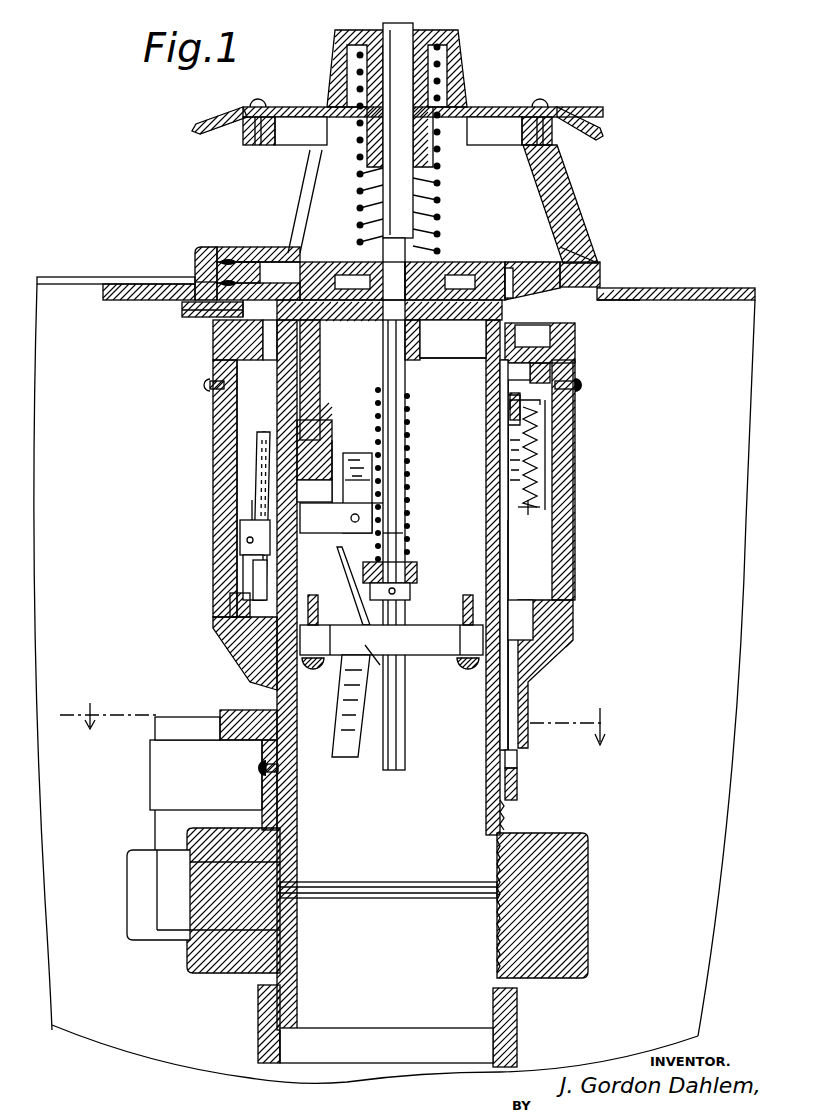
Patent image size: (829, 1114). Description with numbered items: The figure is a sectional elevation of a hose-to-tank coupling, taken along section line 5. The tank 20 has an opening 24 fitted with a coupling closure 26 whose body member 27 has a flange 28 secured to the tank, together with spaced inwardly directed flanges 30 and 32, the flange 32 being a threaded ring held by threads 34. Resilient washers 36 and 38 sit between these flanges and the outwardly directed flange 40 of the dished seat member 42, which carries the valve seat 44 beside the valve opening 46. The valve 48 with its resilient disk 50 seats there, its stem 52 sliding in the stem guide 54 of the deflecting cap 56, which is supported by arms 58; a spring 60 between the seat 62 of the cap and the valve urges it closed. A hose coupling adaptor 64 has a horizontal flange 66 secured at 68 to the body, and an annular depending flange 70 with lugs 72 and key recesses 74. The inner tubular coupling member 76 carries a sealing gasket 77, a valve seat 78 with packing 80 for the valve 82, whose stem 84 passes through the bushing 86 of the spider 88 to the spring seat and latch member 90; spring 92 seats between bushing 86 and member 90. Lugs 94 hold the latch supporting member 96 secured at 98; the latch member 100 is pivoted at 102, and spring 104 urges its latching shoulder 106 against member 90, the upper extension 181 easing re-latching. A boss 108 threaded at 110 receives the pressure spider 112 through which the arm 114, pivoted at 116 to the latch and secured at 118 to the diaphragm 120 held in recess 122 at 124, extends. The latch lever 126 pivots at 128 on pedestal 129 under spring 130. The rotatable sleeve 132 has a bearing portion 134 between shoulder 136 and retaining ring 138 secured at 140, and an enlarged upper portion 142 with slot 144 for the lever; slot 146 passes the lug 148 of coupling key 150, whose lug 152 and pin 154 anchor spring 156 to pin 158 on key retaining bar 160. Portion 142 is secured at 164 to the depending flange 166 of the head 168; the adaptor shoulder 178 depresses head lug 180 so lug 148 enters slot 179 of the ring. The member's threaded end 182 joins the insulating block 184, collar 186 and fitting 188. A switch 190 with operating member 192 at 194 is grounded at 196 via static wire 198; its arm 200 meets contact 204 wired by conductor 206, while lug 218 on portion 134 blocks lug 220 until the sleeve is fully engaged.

The tank 20 is at (718, 290).
The opening 24 is at (590, 300).
The flange 28 is at (640, 302).
The deflecting cap 56 is at (462, 98).
The stem guide 54 is at (450, 65).
The arms 58 is at (565, 165).
The spring 60 is at (440, 183).
The stem 52 is at (405, 178).
The seat 62 is at (413, 32).
The inwardly directed flange 32 is at (198, 262).
The threads 34 is at (195, 282).
The outwardly directed flange 40 is at (217, 250).
The resilient washer 36 is at (228, 262).
The seat member 42 is at (258, 270).
The valve opening 46 is at (280, 283).
The hose coupling adaptor 64 is at (183, 305).
The horizontal flange 66 is at (210, 312).
The securing means 68 is at (243, 315).
The resilient washer 38 is at (230, 330).
The annular depending flange 70 is at (225, 350).
The sealing gasket 77 is at (260, 358).
The depending flange 166 is at (210, 385).
The resilient seating member 80 is at (300, 345).
The bushing 86 is at (420, 328).
The valve seat 78 is at (271, 675).
The stem 84 is at (420, 372).
The spider 88 is at (465, 372).
The shoulder 178 is at (488, 395).
The valve 82 is at (378, 402).
The spring 92 is at (410, 440).
The boss 108 is at (318, 440).
The threads 110 is at (330, 470).
The arm 114 is at (352, 453).
The pressure spider 112 is at (336, 518).
The recess 122 is at (300, 430).
The pedestal 129 is at (260, 414).
The pivot 128 is at (262, 433).
The securing means 124 is at (262, 452).
The pressure responsive diaphragm 120 is at (257, 471).
The spring 130 is at (257, 490).
The securing means 118 is at (250, 520).
The latch lever 126 is at (240, 580).
The slot 144 is at (250, 600).
The shoulder 136 is at (235, 612).
The bearing portion 134 is at (255, 678).
The upper extension 181 is at (372, 472).
The pivot 116 is at (372, 518).
The latching shoulder 106 is at (380, 545).
The spring seat and latch member 90 is at (380, 590).
The lugs 94 is at (420, 590).
The spring 104 is at (415, 635).
The latch supporting member 96 is at (428, 655).
The securing means 98 is at (468, 666).
The pivot 102 is at (370, 650).
The latch member 100 is at (350, 757).
The hose coupling sleeve head 168 is at (550, 328).
The key recesses 74 is at (550, 365).
The lugs 72 is at (530, 372).
The securing means 164 is at (578, 383).
The head lug 180 is at (520, 385).
The pin 158 is at (530, 409).
The enlarged upper portion 142 is at (545, 426).
The spring 156 is at (540, 443).
The coupling sleeve 132 is at (570, 460).
The lug 152 is at (535, 500).
The pin 154 is at (520, 507).
The key retaining bar 160 is at (510, 410).
The tubular coupling member 76 is at (500, 540).
The coupling key 150 is at (510, 550).
The slot 146 is at (560, 650).
The lug 148 is at (518, 758).
The slot 179 is at (520, 773).
The threads 182 is at (500, 830).
The insulating block 184 is at (590, 918).
The fitting 188 is at (518, 1008).
The collar 186 is at (470, 1030).
The static wire 198 is at (300, 1050).
The electrical connection 196 is at (187, 960).
The conductor 206 is at (246, 845).
The contact 204 is at (178, 862).
The switch arm 200 is at (150, 870).
The switch location 194 is at (143, 893).
The switch 190 is at (135, 917).
The operating member 192 is at (155, 770).
The lug 220 is at (165, 740).
The lug 218 is at (240, 712).
The securing means 140 is at (285, 770).
The retaining ring 138 is at (285, 795).
The section line 5 is at (344, 724).
The coupling closure 26 is at (595, 255).
The body member 27 is at (600, 275).
The inwardly directed flange 30 is at (540, 262).
The valve seat 44 is at (512, 295).
The resilient disk 50 is at (470, 280).
The valve 48 is at (440, 280).